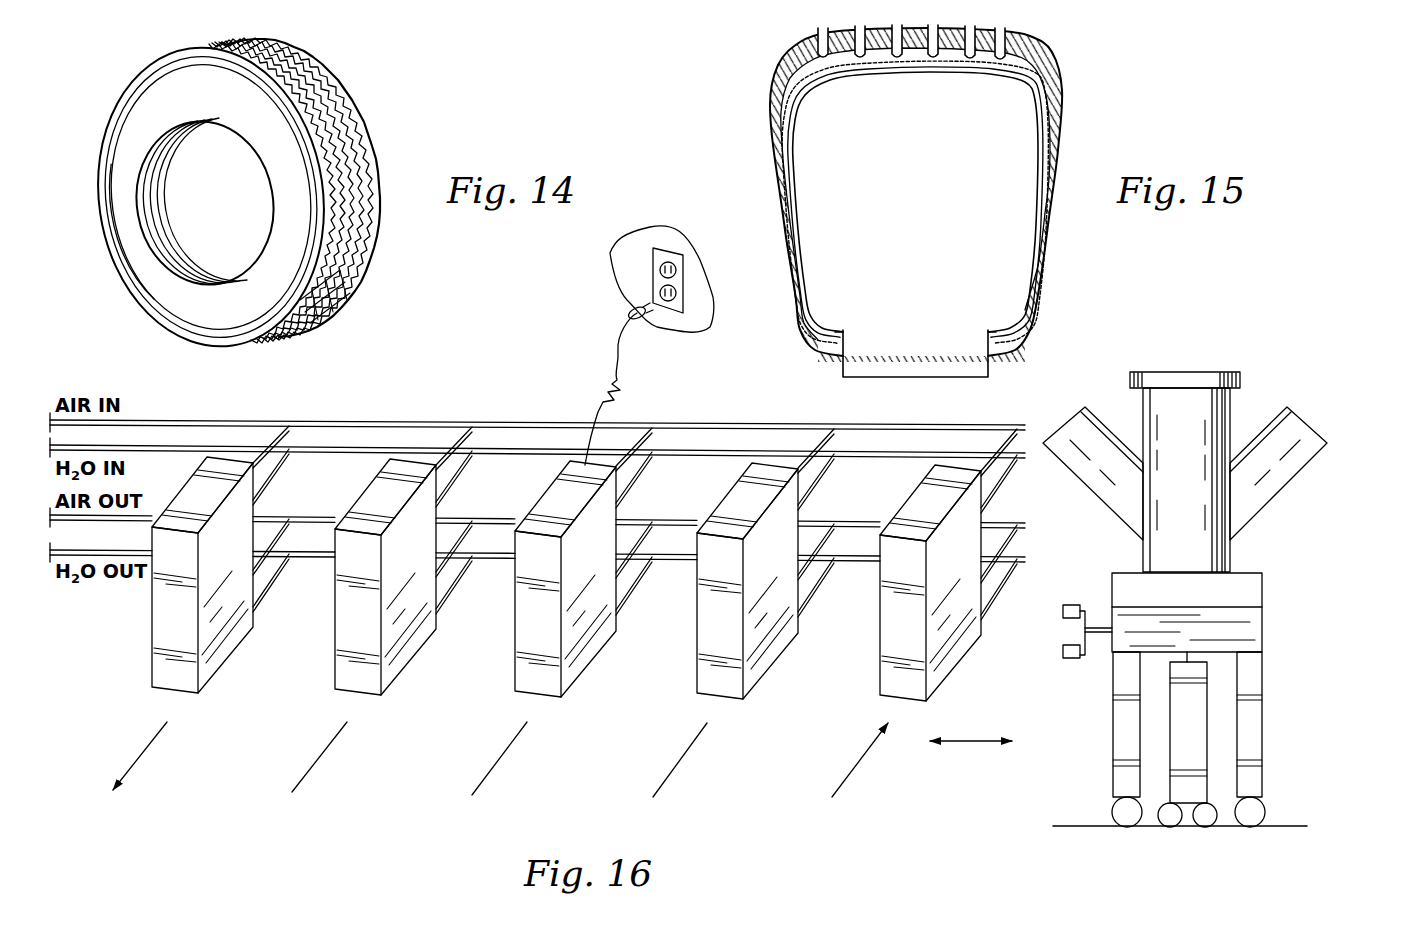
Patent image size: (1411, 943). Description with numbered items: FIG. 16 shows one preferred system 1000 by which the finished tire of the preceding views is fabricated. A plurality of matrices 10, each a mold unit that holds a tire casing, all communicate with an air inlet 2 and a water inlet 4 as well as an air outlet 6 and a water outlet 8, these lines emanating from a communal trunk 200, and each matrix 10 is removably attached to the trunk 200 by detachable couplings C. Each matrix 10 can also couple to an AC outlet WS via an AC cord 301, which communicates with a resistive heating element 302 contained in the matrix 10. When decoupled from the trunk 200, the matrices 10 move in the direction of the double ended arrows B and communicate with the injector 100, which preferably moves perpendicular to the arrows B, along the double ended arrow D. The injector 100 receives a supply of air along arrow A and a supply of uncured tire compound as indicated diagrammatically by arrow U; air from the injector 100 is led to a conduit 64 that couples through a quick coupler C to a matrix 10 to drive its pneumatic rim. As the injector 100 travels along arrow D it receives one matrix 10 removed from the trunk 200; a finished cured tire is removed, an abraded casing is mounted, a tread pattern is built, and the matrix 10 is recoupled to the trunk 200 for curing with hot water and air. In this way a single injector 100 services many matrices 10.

The air inlet 2 is at (357, 418).
The water inlet 4 is at (412, 447).
The air outlet 6 is at (455, 517).
The water outlet 8 is at (505, 558).
The matrix 10 is at (942, 646).
The conduit 64 is at (1095, 628).
The injector 100 is at (1210, 566).
The communal trunk 200 is at (473, 315).
The AC cord 301 is at (629, 312).
The resistive heating element 302 is at (611, 384).
The system 1000 is at (1070, 764).
The AC outlet WS is at (700, 325).
The arrow A is at (1192, 365).
The arrow U is at (1315, 420).
The detachable coupling C is at (1060, 652).
The double ended arrow B is at (140, 757).
The double ended arrow D is at (971, 727).